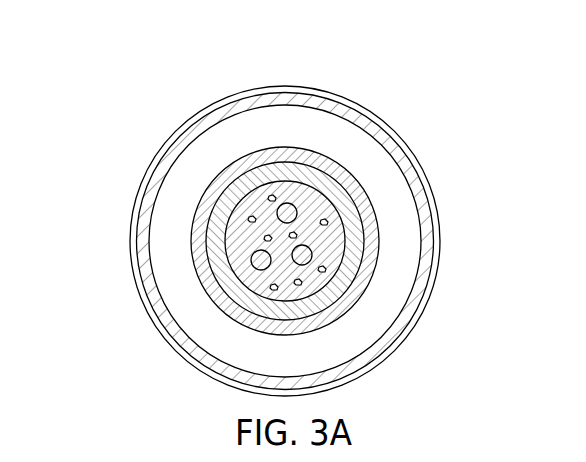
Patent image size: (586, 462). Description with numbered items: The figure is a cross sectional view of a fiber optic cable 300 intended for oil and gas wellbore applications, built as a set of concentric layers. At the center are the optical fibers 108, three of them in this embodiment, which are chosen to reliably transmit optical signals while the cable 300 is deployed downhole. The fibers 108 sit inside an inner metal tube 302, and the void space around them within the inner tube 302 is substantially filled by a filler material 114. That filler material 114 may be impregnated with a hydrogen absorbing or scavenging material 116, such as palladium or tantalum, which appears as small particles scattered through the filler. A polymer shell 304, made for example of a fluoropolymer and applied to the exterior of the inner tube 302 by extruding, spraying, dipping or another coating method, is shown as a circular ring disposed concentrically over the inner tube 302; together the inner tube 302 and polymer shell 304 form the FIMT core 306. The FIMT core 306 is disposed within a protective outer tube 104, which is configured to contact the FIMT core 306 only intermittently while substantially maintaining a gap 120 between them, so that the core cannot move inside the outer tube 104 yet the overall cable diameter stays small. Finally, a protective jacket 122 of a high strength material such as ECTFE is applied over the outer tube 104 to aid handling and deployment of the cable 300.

The fiber optic cable 300 is at (453, 68).
The outer tube 104 is at (177, 132).
The protective jacket 122 is at (438, 217).
The gap 120 is at (383, 195).
The FIMT core 306 is at (283, 145).
The polymer shell 304 is at (343, 163).
The inner metal tube 302 is at (233, 288).
The filler material 114 is at (240, 250).
The hydrogen absorbing/scavenging material 116 is at (250, 218).
The optical fibers 108 is at (303, 255).